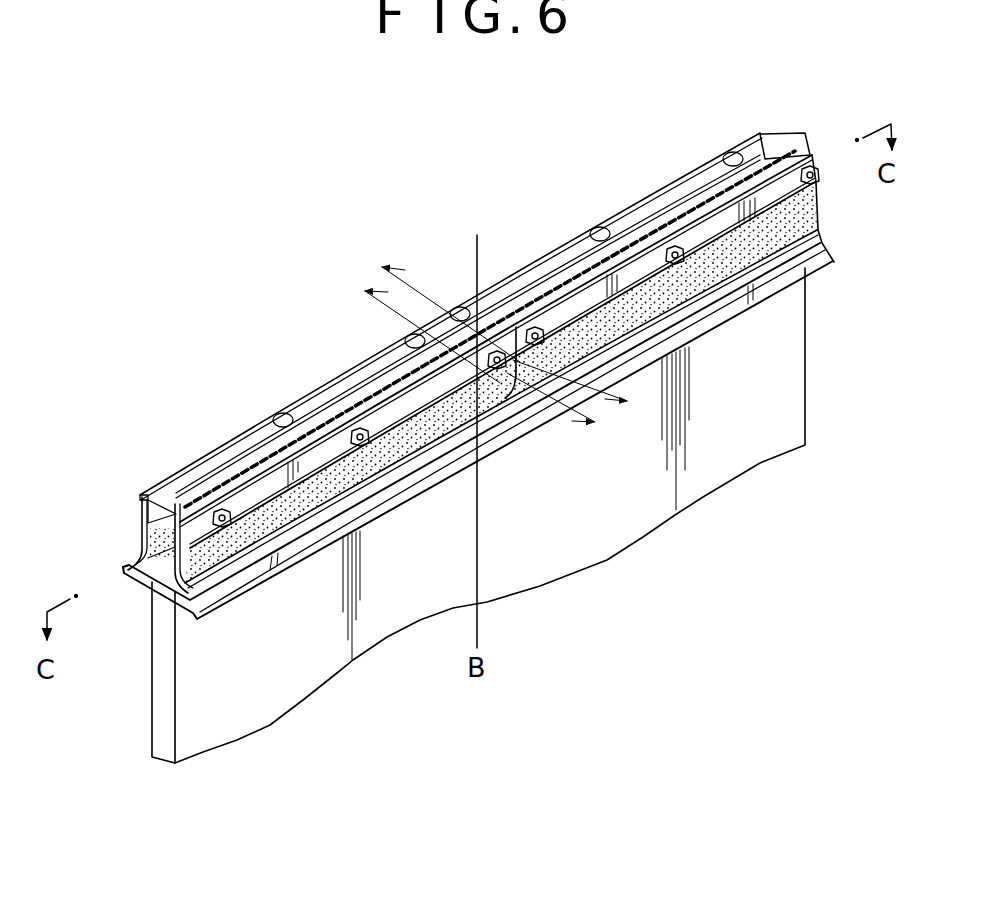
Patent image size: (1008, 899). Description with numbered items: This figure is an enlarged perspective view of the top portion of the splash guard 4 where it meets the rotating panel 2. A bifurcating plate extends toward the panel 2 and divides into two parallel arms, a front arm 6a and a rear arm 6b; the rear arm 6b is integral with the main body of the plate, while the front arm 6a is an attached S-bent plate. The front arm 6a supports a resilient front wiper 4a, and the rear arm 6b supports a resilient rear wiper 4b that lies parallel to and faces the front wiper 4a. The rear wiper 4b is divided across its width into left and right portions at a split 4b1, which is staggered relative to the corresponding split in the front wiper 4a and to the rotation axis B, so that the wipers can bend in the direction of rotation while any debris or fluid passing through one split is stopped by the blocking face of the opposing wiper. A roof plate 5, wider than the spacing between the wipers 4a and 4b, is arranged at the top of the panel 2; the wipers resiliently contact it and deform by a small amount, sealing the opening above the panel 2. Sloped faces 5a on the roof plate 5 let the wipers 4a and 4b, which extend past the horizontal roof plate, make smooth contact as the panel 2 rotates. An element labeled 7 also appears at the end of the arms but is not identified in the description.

The panel 2 is at (803, 370).
The splash guard 4 is at (110, 547).
The front wiper 4a is at (140, 542).
The rear wiper 4b is at (352, 478).
The split 4b1 is at (498, 412).
The roof plate 5 is at (143, 580).
The sloped faces 5a is at (124, 568).
The front arm 6a is at (197, 482).
The rear arm 6b is at (263, 462).
The end cap with nut fasteners 7 is at (753, 132).